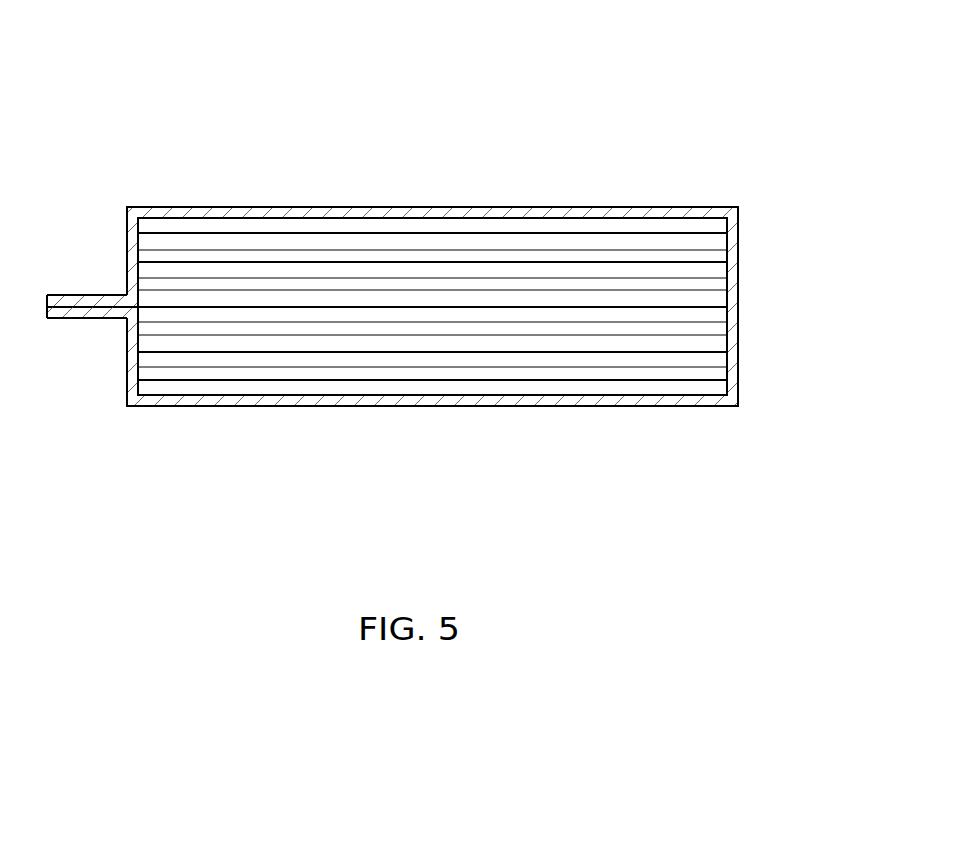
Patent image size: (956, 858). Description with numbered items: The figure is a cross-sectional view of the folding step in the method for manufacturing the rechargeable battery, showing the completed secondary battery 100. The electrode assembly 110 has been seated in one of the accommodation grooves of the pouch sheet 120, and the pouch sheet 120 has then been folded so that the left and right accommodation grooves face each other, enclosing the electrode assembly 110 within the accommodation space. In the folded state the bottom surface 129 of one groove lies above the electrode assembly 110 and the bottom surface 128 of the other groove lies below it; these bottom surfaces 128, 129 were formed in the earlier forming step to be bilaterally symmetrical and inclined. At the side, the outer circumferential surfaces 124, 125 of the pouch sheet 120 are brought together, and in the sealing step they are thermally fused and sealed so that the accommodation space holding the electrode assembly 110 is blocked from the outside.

The secondary battery 100 is at (783, 28).
The electrode assembly 110 is at (523, 352).
The pouch sheet 120 is at (475, 308).
The outer circumferential surface 124 is at (73, 315).
The outer circumferential surface 125 is at (77, 300).
The bottom surface 128 is at (372, 400).
The bottom surface 129 is at (369, 217).